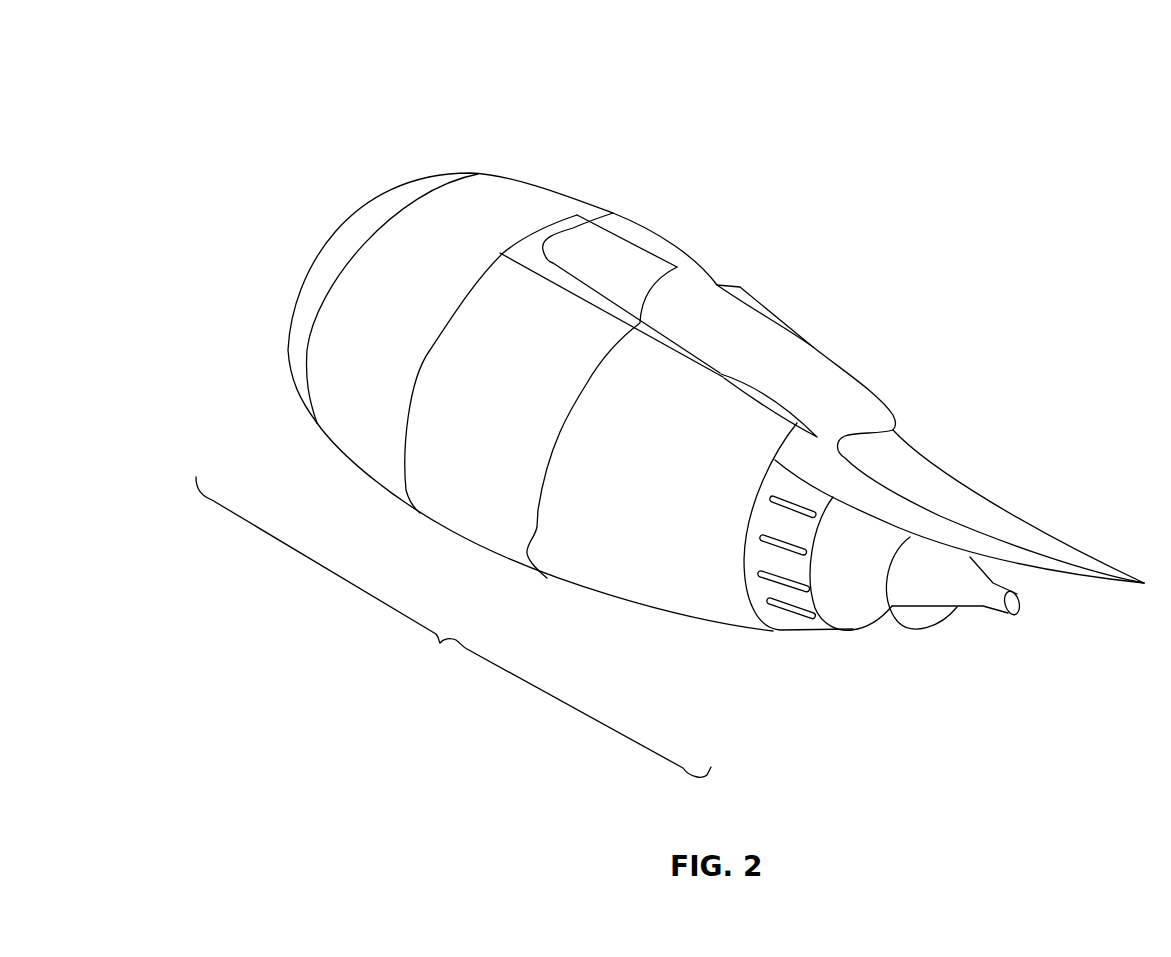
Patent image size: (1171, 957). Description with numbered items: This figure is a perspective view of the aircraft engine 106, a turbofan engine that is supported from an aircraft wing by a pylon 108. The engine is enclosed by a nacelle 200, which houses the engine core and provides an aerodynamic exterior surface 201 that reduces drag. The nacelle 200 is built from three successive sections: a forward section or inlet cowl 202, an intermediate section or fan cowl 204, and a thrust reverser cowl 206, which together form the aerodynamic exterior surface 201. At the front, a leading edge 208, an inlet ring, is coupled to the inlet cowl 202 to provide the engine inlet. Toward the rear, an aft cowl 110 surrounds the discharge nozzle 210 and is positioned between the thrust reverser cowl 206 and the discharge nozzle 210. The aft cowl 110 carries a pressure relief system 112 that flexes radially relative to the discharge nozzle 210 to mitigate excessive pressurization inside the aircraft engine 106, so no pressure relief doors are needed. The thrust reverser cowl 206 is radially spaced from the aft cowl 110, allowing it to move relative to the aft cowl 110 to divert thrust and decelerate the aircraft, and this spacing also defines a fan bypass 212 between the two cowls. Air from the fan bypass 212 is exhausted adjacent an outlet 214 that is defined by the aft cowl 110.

The nacelle 200 is at (280, 70).
The aircraft engine 106 is at (415, 120).
The pylon 108 is at (785, 343).
The aft cowl 110 is at (810, 517).
The pressure relief system 112 is at (834, 541).
The aerodynamic exterior surface 201 is at (453, 627).
The inlet cowl 202 is at (353, 403).
The fan cowl 204 is at (483, 500).
The thrust reverser cowl 206 is at (647, 557).
The leading edge 208 is at (347, 238).
The discharge nozzle 210 is at (921, 631).
The fan bypass 212 is at (780, 626).
The outlet 214 is at (850, 603).